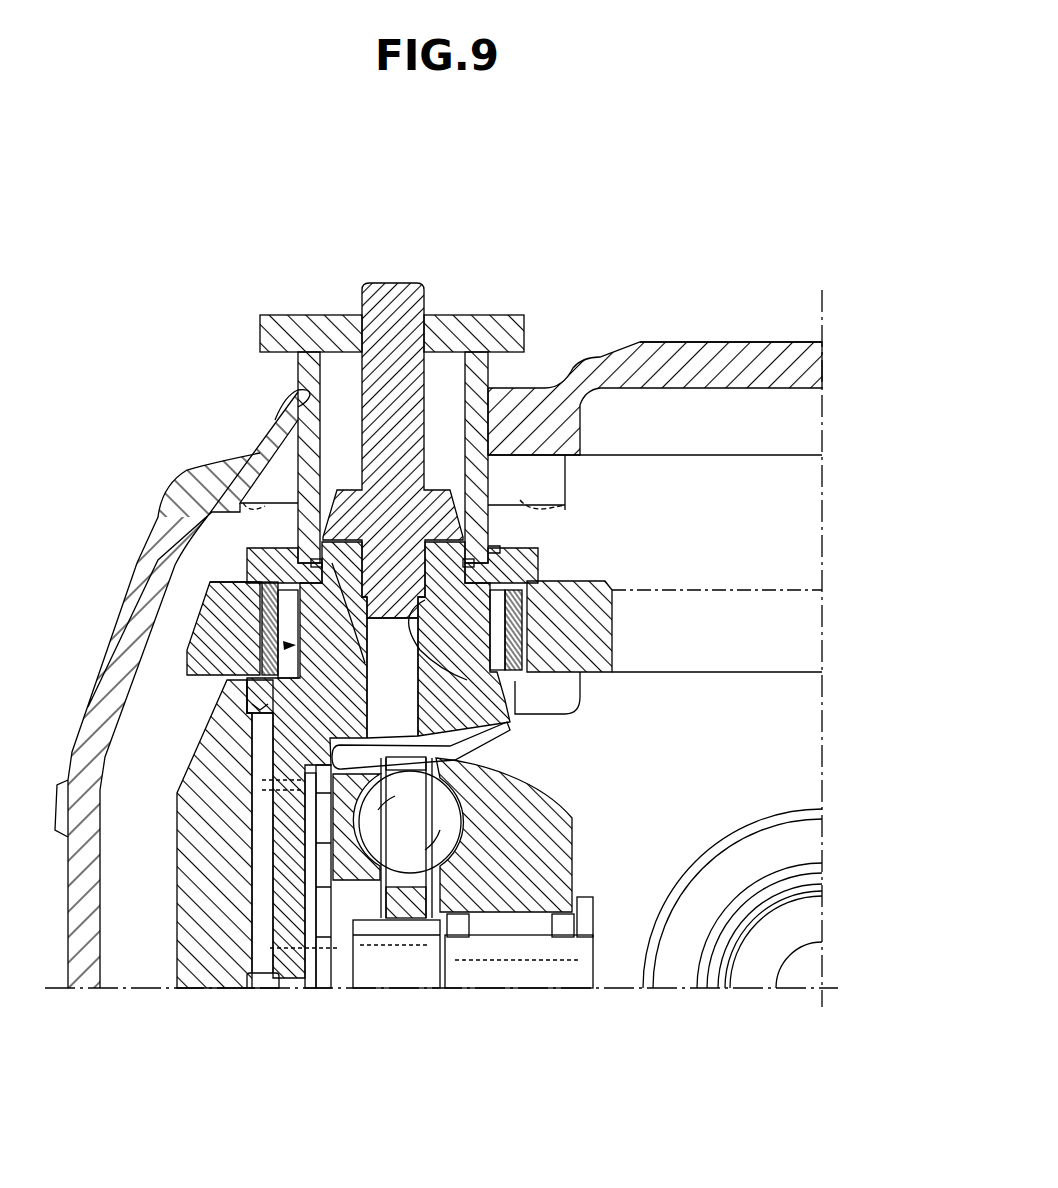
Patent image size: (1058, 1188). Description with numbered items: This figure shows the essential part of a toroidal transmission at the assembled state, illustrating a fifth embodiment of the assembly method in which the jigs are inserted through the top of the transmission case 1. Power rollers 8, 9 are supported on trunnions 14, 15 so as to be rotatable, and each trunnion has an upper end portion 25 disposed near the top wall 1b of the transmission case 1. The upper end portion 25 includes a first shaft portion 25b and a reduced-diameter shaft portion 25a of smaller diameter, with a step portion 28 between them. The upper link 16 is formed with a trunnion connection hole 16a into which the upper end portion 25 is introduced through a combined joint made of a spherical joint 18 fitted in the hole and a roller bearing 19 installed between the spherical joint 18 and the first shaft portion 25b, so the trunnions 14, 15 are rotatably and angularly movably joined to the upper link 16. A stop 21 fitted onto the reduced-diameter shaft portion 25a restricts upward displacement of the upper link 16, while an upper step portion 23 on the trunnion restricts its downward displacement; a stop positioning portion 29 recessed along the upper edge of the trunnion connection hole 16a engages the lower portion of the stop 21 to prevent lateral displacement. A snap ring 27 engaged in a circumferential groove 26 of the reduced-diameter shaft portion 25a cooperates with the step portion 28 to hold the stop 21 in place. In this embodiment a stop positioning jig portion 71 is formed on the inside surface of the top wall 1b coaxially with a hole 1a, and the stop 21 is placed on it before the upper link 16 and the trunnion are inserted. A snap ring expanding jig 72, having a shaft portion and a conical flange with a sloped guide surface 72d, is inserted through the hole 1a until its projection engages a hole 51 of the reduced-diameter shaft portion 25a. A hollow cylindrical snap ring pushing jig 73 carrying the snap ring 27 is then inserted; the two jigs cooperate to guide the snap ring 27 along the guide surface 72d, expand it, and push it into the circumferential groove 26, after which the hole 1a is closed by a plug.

The transmission case 1 is at (660, 332).
The hole 1a is at (290, 385).
The top wall 1b is at (724, 357).
The power roller 8 is at (557, 822).
The power roller 9 is at (498, 837).
The trunnion 14 is at (190, 898).
The trunnion 15 is at (176, 690).
The upper link 16 is at (600, 607).
The trunnion connection hole 16a is at (578, 683).
The spherical joint 18 is at (262, 632).
The roller bearing 19 is at (245, 660).
The stop 21 is at (262, 578).
The upper step portion 23 is at (287, 695).
The upper end portion 25 is at (278, 655).
The reduced-diameter shaft portion 25a is at (262, 560).
The first shaft portion 25b is at (280, 626).
The circumferential groove 26 is at (392, 678).
The snap ring 27 is at (505, 548).
The step portion 28 is at (250, 566).
The stop positioning portion 29 is at (257, 575).
The hole 51 is at (517, 722).
The stop positioning jig portion 71 is at (560, 505).
The snap ring expanding jig 72 is at (410, 298).
The sloped guide surface 72d is at (258, 453).
The snap ring pushing jig 73 is at (495, 330).